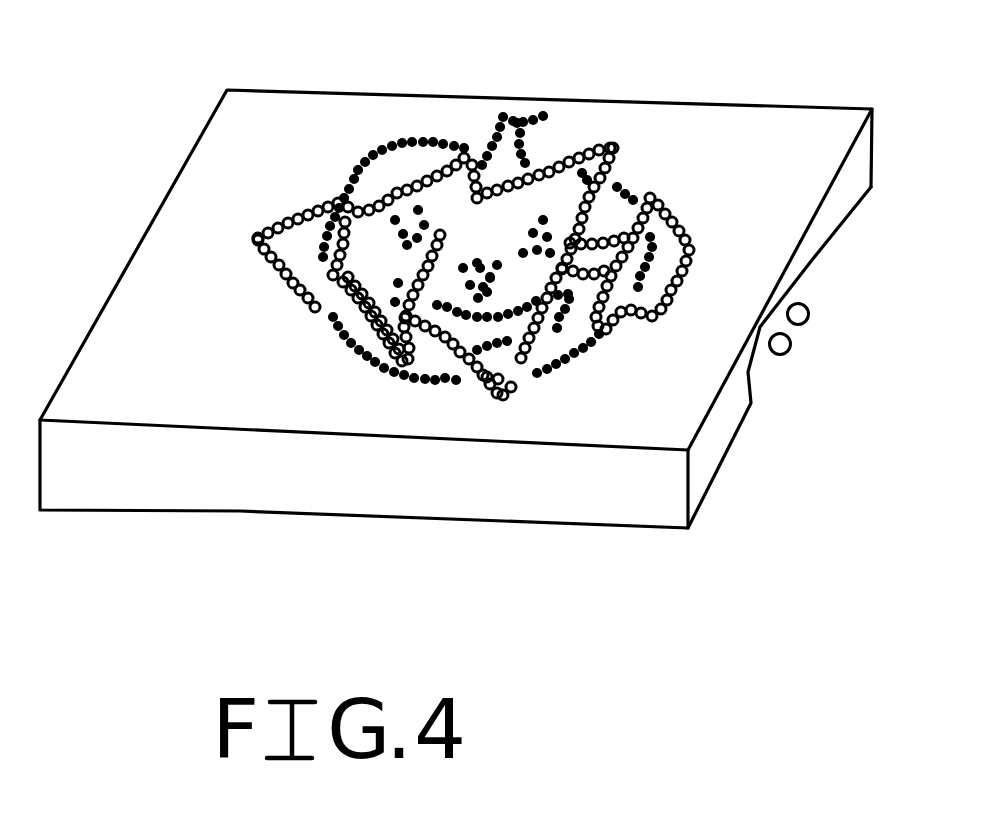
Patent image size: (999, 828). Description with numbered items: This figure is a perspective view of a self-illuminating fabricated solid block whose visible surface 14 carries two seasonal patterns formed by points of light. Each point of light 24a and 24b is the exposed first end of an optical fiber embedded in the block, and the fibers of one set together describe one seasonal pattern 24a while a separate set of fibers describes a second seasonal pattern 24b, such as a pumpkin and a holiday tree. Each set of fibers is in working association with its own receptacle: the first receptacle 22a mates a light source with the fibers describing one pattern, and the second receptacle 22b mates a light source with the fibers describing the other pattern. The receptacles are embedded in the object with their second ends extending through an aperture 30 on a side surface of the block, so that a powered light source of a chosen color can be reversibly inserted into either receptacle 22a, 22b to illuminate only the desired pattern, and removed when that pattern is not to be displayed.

The visible surface 14 is at (508, 272).
The first receptacle 22a is at (790, 354).
The second receptacle 22b is at (806, 310).
The points of light of one seasonal pattern 24a is at (282, 217).
The points of light of another seasonal pattern 24b is at (553, 116).
The aperture 30 is at (815, 290).